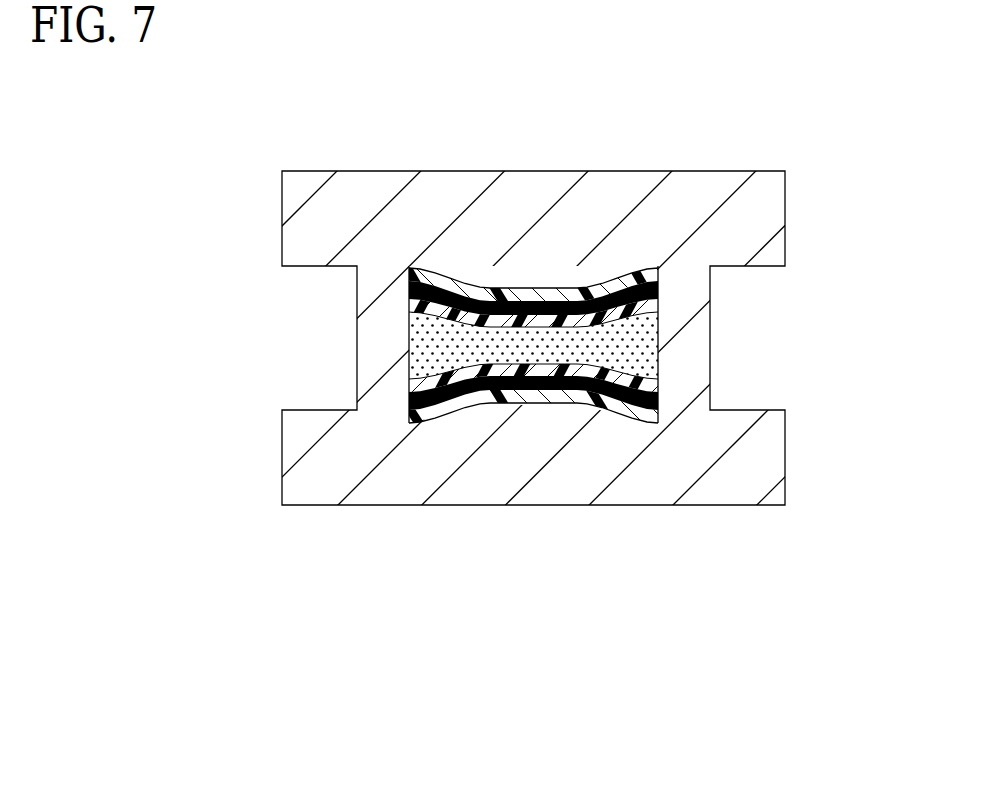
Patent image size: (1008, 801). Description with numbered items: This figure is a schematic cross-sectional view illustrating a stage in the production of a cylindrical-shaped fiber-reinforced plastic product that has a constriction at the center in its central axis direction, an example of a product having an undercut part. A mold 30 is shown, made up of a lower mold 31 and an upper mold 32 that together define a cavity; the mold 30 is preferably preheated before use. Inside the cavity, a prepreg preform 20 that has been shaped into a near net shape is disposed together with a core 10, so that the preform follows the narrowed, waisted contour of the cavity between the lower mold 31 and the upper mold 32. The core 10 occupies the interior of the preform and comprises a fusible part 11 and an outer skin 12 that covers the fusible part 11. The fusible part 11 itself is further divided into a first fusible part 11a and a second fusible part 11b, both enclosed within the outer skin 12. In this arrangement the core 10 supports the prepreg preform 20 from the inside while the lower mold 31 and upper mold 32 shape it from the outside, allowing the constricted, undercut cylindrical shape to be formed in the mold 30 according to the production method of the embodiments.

The core 10 is at (554, 352).
The fusible part 11 is at (554, 350).
The first fusible part 11a is at (645, 302).
The second fusible part 11b is at (643, 338).
The outer skin 12 is at (620, 293).
The prepreg preform 20 is at (565, 397).
The mold 30 is at (504, 335).
The lower mold 31 is at (302, 450).
The upper mold 32 is at (302, 220).